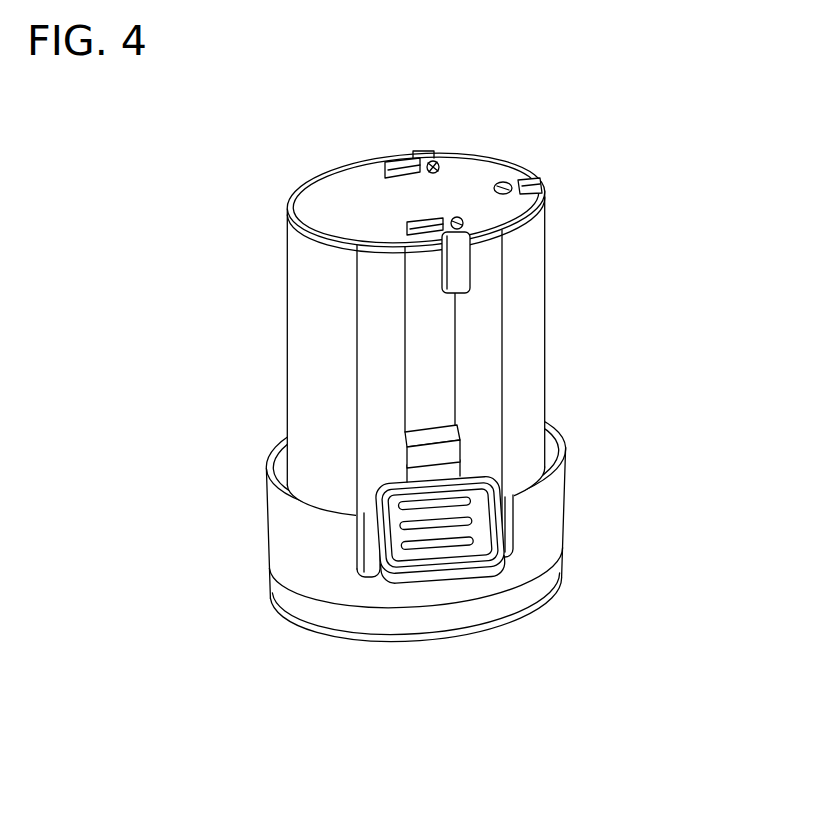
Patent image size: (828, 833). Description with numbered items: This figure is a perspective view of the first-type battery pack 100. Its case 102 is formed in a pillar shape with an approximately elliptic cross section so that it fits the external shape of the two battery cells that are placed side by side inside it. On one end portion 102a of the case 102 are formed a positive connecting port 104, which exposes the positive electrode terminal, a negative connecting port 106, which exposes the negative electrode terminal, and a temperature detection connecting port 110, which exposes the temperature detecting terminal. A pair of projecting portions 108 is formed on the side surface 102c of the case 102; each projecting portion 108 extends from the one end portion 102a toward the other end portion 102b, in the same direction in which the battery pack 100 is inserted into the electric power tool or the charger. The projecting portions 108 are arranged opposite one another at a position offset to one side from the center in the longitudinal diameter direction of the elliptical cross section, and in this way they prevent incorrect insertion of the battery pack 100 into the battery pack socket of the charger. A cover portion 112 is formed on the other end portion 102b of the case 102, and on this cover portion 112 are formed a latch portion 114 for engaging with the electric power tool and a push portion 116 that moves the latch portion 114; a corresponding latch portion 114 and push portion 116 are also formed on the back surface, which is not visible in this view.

The first-type battery pack 100 is at (425, 383).
The case 102 is at (425, 400).
The end portion 102a is at (312, 195).
The other end portion 102b is at (293, 618).
The side surface 102c is at (307, 397).
The positive connecting port 104 is at (393, 158).
The negative connecting port 106 is at (423, 218).
The projecting portions 108 is at (457, 257).
The temperature detection connecting port 110 is at (540, 181).
The cover portion 112 is at (567, 488).
The latch portion 114 is at (450, 452).
The push portion 116 is at (440, 543).